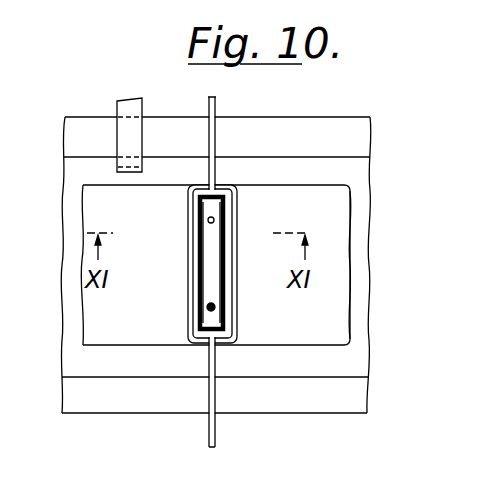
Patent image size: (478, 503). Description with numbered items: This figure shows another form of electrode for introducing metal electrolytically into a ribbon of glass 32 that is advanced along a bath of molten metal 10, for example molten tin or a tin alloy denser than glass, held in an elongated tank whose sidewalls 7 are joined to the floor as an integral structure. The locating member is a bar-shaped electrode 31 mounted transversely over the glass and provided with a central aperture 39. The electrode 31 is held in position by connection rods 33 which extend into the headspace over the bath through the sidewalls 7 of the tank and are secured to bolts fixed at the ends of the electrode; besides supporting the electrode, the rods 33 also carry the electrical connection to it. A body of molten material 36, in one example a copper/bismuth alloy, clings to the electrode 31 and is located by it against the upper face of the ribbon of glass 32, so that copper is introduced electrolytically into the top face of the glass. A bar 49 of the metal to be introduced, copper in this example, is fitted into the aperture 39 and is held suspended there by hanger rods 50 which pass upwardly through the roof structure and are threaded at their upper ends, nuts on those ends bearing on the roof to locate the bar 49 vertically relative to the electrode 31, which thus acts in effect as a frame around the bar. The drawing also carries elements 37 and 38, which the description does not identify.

The sidewalls 7 is at (297, 125).
The bath of molten metal 10 is at (114, 362).
The bar-shaped electrode 31 is at (197, 283).
The ribbon of glass 32 is at (172, 341).
The connection rods 33 is at (213, 132).
The body of molten material 36 is at (189, 255).
The slot 37 is at (118, 172).
The block 38 is at (136, 136).
The central aperture 39 is at (225, 268).
The bar 49 is at (216, 243).
The hanger rods 50 is at (208, 220).